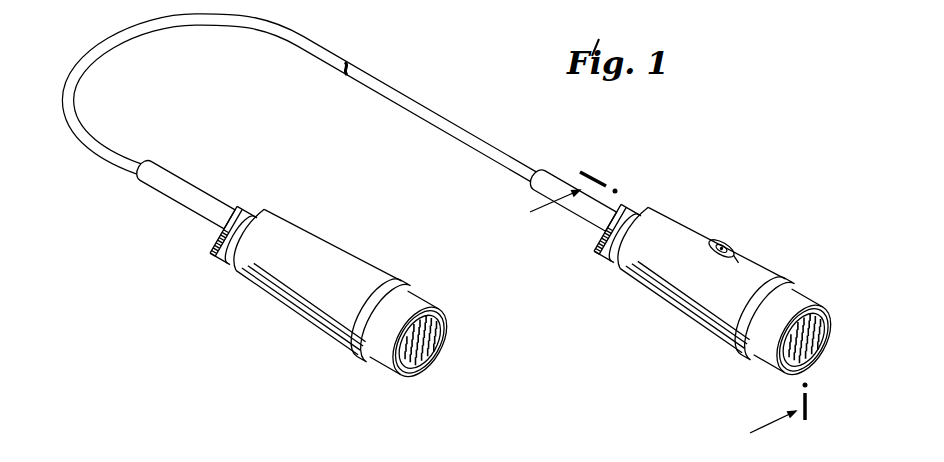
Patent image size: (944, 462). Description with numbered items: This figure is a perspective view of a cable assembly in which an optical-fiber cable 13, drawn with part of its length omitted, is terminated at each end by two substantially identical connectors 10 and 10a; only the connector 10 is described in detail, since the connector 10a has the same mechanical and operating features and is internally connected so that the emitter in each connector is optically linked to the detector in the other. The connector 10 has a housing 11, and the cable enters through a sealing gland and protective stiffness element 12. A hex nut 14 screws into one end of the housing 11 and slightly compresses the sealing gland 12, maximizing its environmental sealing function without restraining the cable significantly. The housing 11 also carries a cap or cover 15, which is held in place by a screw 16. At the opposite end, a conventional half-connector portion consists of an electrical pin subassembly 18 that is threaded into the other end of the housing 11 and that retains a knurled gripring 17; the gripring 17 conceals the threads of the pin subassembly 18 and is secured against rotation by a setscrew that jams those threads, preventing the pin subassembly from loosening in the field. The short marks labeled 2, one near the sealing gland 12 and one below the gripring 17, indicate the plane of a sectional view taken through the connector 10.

The terminating connector 10 is at (700, 275).
The terminating connector 10a is at (282, 324).
The housing 11 is at (628, 282).
The sealing gland and protective stiffness element 12 is at (572, 215).
The optical-fiber cable 13 is at (380, 84).
The hex nut 14 is at (636, 204).
The cap or cover 15 is at (690, 228).
The screw 16 is at (730, 252).
The knurled gripring 17 is at (794, 300).
The electrical pin subassembly 18 is at (820, 344).
The section line 2- 2 is at (677, 295).